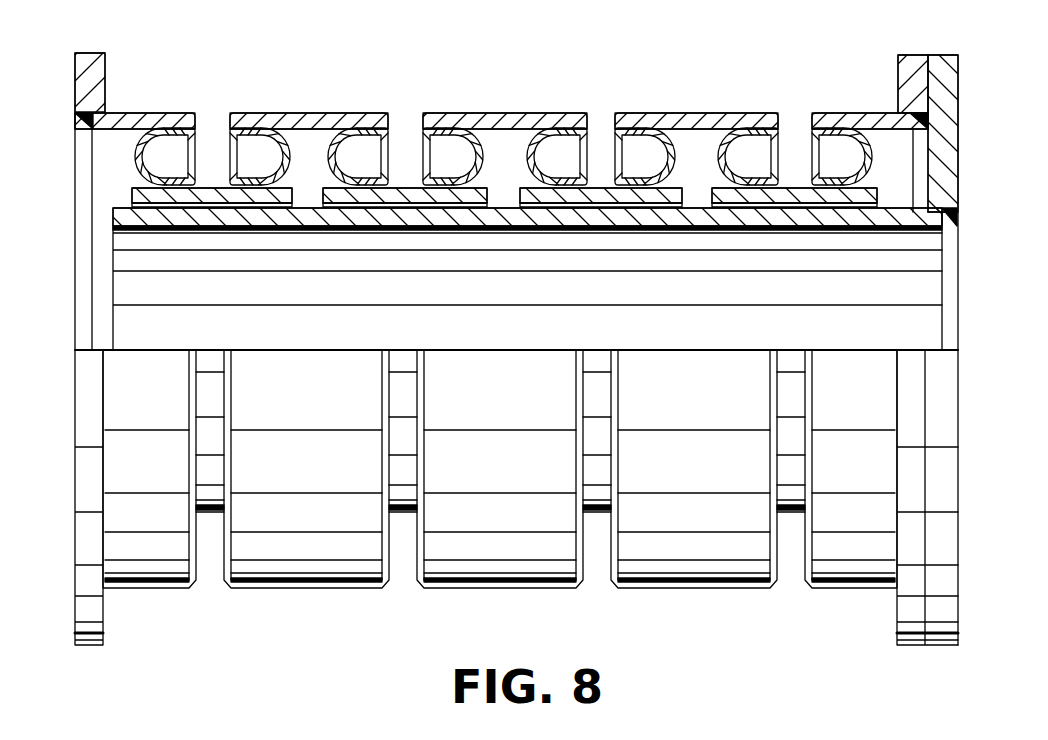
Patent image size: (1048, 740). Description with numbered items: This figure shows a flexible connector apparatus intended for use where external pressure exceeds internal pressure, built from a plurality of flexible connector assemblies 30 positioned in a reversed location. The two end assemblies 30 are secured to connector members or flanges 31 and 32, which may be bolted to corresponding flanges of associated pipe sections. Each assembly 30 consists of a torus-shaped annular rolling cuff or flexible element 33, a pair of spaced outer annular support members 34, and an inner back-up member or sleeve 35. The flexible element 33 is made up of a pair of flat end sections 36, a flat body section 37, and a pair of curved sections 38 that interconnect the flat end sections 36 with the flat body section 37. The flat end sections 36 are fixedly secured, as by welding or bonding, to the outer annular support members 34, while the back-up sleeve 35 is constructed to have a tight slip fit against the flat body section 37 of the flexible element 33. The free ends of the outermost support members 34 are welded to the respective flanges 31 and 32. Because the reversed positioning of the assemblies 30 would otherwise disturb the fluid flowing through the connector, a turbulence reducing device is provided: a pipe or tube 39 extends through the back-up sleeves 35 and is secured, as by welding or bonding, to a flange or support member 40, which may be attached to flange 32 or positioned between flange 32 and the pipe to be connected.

The flexible connector assembly 30 is at (214, 70).
The connector member or flange 31 is at (94, 53).
The connector member or flange 32 is at (930, 55).
The rolling cuff or flexible element 33 is at (318, 167).
The outer annular support member 34 is at (148, 113).
The back-up member or sleeve 35 is at (246, 207).
The flat end section 36 is at (224, 150).
The flat body section 37 is at (204, 180).
The curved section 38 is at (151, 154).
The pipe or tube 39 is at (902, 213).
The flange or support member 40 is at (962, 138).